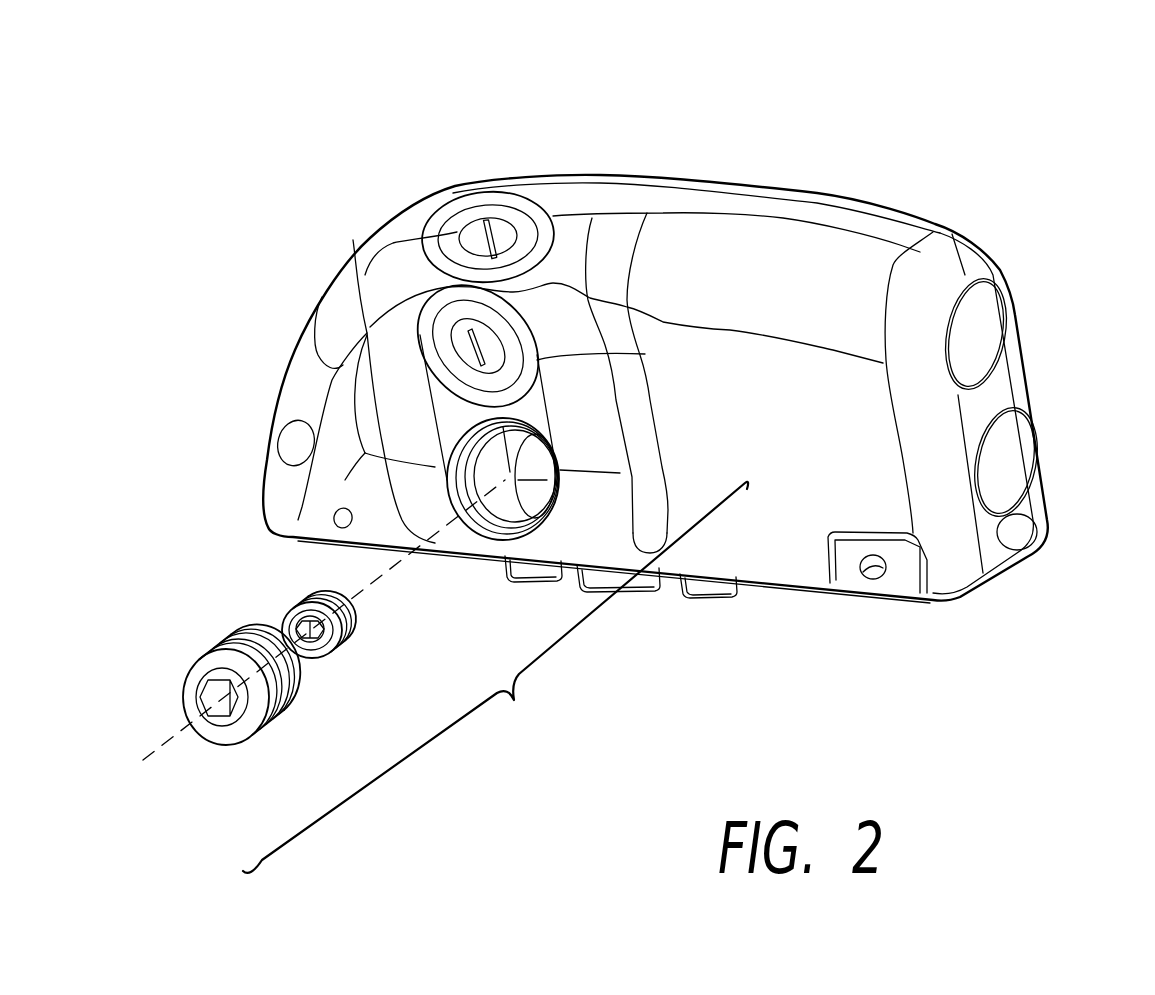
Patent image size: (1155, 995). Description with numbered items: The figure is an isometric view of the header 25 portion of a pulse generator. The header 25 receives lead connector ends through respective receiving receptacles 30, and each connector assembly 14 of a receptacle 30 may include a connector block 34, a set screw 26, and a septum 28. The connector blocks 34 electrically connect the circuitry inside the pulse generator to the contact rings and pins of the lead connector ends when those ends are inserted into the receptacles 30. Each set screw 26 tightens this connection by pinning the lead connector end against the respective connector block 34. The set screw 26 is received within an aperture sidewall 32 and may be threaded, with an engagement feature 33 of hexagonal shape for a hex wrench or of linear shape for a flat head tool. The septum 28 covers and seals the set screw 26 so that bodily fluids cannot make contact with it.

The header 25 is at (773, 172).
The connector assembly 14 is at (437, 230).
The receiving receptacle 30 is at (978, 333).
The aperture sidewall 32 is at (473, 453).
The connector block 34 is at (523, 473).
The set screw 26 is at (287, 590).
The septum 28 is at (200, 627).
The engagement feature 33 is at (318, 628).